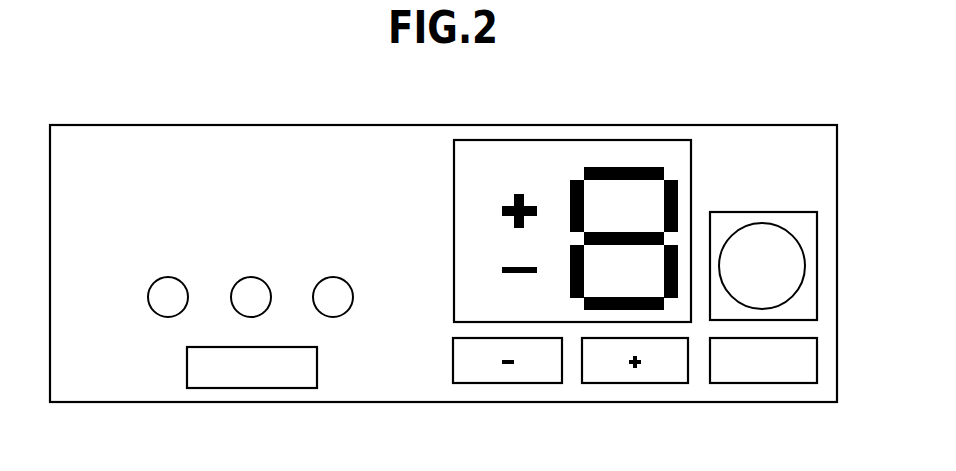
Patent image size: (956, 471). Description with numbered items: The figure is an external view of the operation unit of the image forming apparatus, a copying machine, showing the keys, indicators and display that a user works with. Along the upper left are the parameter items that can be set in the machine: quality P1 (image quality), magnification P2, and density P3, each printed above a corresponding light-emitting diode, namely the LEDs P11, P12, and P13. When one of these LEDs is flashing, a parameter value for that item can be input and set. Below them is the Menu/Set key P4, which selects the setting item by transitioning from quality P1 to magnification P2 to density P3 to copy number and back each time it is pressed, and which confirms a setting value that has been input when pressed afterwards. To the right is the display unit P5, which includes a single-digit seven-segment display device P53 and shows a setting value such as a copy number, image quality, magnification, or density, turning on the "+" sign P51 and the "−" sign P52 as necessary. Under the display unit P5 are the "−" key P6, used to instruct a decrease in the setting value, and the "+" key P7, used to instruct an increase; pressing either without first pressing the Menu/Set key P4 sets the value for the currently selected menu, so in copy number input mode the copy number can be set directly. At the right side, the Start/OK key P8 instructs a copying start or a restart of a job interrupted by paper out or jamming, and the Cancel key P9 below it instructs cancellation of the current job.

The quality P1 is at (170, 250).
The magnification P2 is at (253, 250).
The density P3 is at (337, 250).
The Menu/Set key P4 is at (318, 368).
The display unit P5 is at (453, 174).
The "+" indicator P51 is at (520, 190).
The "−" indicator P52 is at (512, 265).
The single-digit seven-segment display device P53 is at (670, 173).
The "−" key P6 is at (510, 384).
The "+" key P7 is at (633, 384).
The "Start/OK" key P8 is at (796, 212).
The "Cancel" key P9 is at (766, 384).
The light-emitting diode P11 is at (148, 297).
The light-emitting diode P12 is at (265, 310).
The light-emitting diode P13 is at (354, 297).